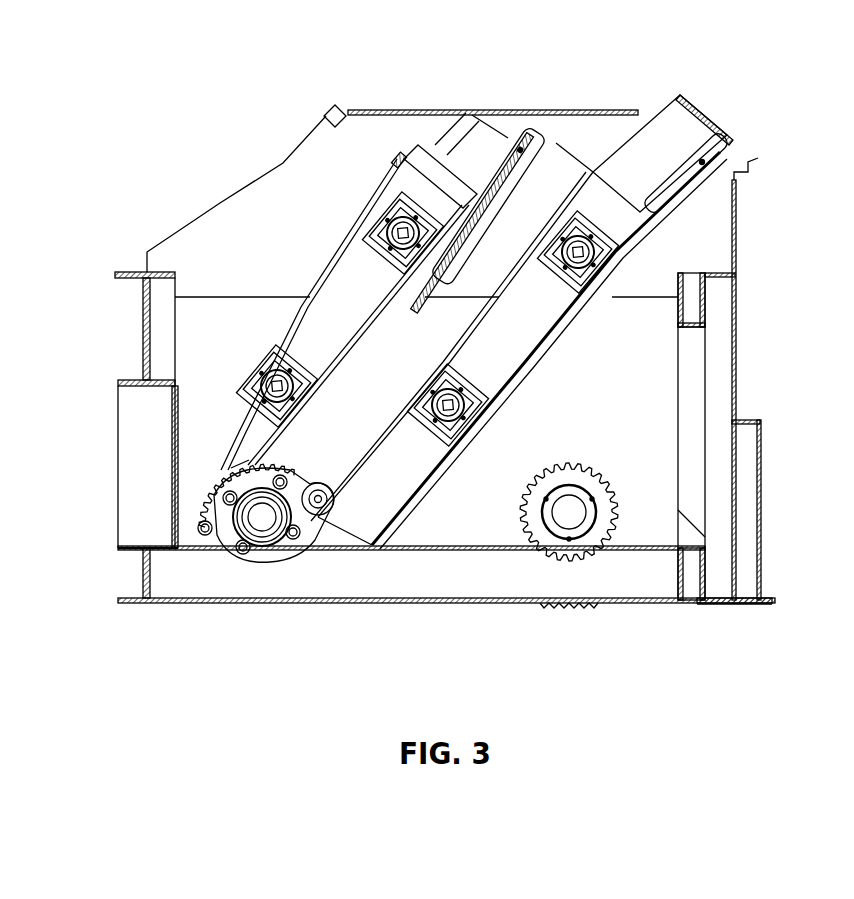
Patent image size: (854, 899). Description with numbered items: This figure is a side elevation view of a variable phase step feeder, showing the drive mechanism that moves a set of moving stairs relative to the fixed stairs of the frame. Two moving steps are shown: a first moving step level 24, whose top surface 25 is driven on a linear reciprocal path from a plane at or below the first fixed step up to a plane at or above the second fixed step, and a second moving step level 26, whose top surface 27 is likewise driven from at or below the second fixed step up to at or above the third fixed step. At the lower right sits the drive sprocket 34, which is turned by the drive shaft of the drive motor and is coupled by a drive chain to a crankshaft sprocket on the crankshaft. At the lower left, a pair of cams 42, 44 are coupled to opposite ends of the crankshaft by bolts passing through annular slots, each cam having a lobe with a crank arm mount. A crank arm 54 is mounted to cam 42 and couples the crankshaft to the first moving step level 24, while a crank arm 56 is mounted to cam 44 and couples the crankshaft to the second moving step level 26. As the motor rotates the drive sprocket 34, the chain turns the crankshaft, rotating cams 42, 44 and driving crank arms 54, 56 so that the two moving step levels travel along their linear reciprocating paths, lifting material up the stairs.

The first moving step level 24 is at (428, 164).
The top surface 25 is at (453, 175).
The second moving step level 26 is at (637, 137).
The top surface 27 is at (692, 102).
The drive sprocket 34 is at (598, 503).
The cam 42 is at (193, 528).
The cam 44 is at (270, 548).
The crank arm 54 is at (245, 447).
The crank arm 56 is at (350, 468).